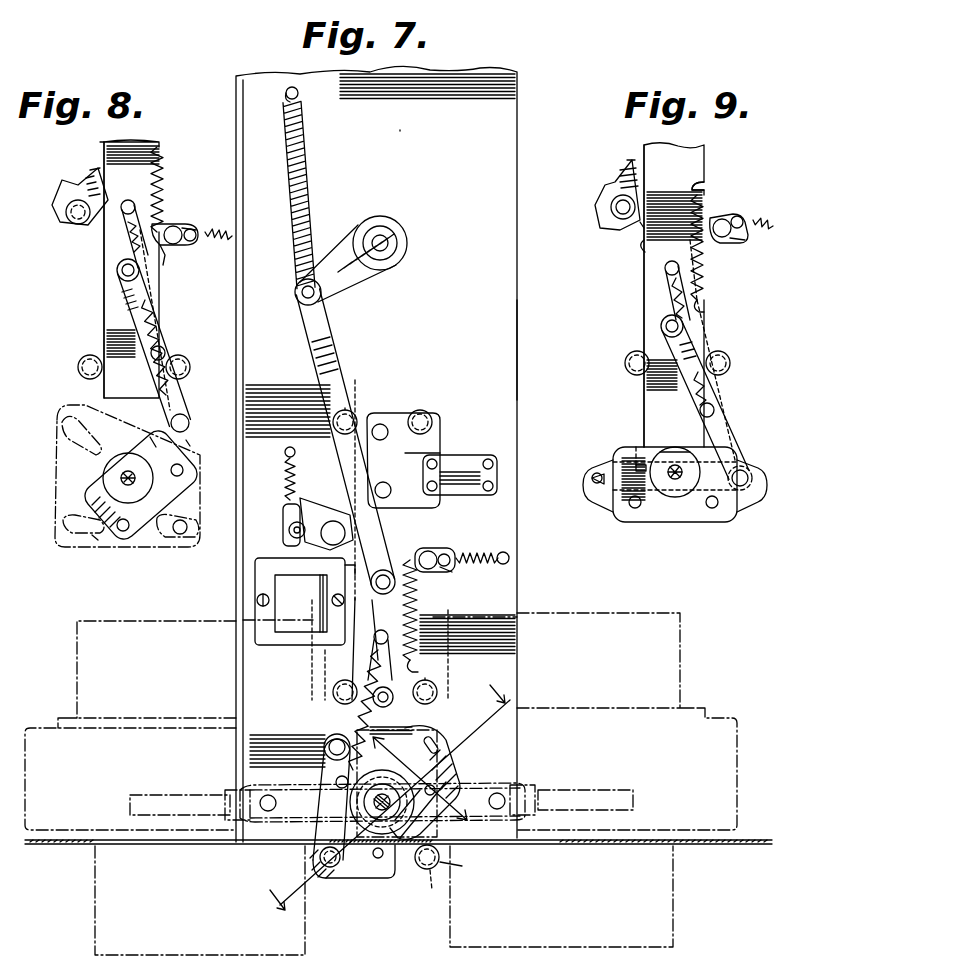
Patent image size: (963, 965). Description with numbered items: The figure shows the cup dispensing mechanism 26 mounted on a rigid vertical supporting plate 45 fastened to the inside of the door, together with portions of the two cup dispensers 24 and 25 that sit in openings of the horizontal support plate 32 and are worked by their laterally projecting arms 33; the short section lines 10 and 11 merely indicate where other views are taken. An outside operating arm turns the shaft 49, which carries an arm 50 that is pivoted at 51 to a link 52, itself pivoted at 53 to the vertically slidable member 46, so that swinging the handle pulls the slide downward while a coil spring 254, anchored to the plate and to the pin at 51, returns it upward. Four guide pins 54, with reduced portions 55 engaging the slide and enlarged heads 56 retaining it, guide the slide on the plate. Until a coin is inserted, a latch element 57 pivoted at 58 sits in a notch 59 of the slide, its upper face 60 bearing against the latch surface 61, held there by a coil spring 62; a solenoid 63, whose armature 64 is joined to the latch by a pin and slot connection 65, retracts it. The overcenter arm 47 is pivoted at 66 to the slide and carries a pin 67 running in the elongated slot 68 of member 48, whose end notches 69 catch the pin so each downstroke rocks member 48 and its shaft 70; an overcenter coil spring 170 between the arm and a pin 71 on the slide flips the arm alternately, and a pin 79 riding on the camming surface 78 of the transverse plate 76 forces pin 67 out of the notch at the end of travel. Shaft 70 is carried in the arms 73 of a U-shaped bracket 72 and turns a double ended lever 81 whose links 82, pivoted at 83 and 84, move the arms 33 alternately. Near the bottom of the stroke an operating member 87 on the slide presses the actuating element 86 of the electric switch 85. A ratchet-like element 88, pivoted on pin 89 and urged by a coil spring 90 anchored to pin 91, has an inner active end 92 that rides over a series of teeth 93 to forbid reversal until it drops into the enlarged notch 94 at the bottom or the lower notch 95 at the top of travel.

In FIG. 7, the section line 10- 10 is at (500, 691).
In FIG. 7, the section line 11- 11 is at (380, 740).
In FIG. 7, the cup dispenser 24 is at (77, 662).
In FIG. 7, the cup dispenser 25 is at (680, 655).
In FIG. 7, the mechanism 26 is at (436, 290).
In FIG. 7, the horizontal support element or plate 32 is at (460, 855).
In FIG. 7, the laterally projecting arm 33 is at (545, 790).
In FIG. 7, the supporting plate 45 is at (500, 358).
In FIG. 7, the vertically slidable member 46 is at (358, 660).
In FIG. 8, the vertically slidable member 46 is at (108, 256).
In FIG. 9, the vertically slidable member 46 is at (655, 290).
In FIG. 7, the overcenter arm 47 is at (330, 790).
In FIG. 8, the overcenter arm 47 is at (197, 495).
In FIG. 9, the overcenter arm 47 is at (725, 420).
In FIG. 7, the slotted member 48 is at (455, 760).
In FIG. 8, the slotted member 48 is at (60, 540).
In FIG. 9, the slotted member 48 is at (596, 494).
In FIG. 7, the shaft 49 is at (388, 243).
In FIG. 7, the arm 50 is at (340, 293).
In FIG. 7, the pivotal connection 51 is at (298, 305).
In FIG. 7, the link 52 is at (350, 365).
In FIG. 7, the pivotal connection 53 is at (396, 586).
In FIG. 7, the guide elements or pins 54 is at (444, 680).
In FIG. 7, the reduced diameter portions 55 is at (333, 692).
In FIG. 7, the enlarged diameter heads 56 is at (437, 692).
In FIG. 7, the latch element 57 is at (340, 512).
In FIG. 8, the latch element 57 is at (80, 182).
In FIG. 9, the latch element 57 is at (625, 176).
In FIG. 7, the pivotal mounting 58 is at (328, 524).
In FIG. 8, the pivotal mounting 58 is at (78, 224).
In FIG. 9, the pivotal mounting 58 is at (610, 210).
In FIG. 8, the notch 59 is at (93, 170).
In FIG. 9, the notch 59 is at (652, 250).
In FIG. 8, the upper face 60 is at (106, 152).
In FIG. 9, the upper face 60 is at (624, 160).
In FIG. 7, the latch surface 61 is at (332, 600).
In FIG. 9, the latch surface 61 is at (642, 230).
In FIG. 7, the coil spring 62 is at (284, 470).
In FIG. 7, the solenoid 63 is at (256, 592).
In FIG. 7, the armature 64 is at (289, 535).
In FIG. 7, the pin and slot connection 65 is at (284, 512).
In FIG. 7, the pivotal attachment 66 is at (388, 690).
In FIG. 8, the pivotal attachment 66 is at (117, 272).
In FIG. 9, the pivotal attachment 66 is at (661, 326).
In FIG. 7, the pin 67 is at (318, 858).
In FIG. 8, the pin 67 is at (190, 425).
In FIG. 9, the pin 67 is at (746, 490).
In FIG. 8, the slot 68 is at (150, 437).
In FIG. 9, the slot 68 is at (636, 462).
In FIG. 7, the notches 69 is at (340, 868).
In FIG. 8, the notches 69 is at (92, 540).
In FIG. 9, the notches 69 is at (592, 478).
In FIG. 7, the shaft 70 is at (388, 822).
In FIG. 8, the shaft 70 is at (121, 480).
In FIG. 9, the shaft 70 is at (675, 480).
In FIG. 7, the pin 71 is at (386, 628).
In FIG. 8, the pin 71 is at (128, 200).
In FIG. 9, the pin 71 is at (665, 268).
In FIG. 7, the U-shaped bracket 72 is at (378, 870).
In FIG. 7, the arms 73 is at (357, 806).
In FIG. 7, the transverse plate 76 is at (455, 773).
In FIG. 7, the camming surface 78 is at (364, 802).
In FIG. 8, the camming surface 78 is at (106, 470).
In FIG. 9, the camming surface 78 is at (692, 452).
In FIG. 7, the pin 79 is at (336, 780).
In FIG. 8, the pin 79 is at (165, 350).
In FIG. 9, the pin 79 is at (700, 410).
In FIG. 7, the double ended lever 81 is at (434, 872).
In FIG. 7, the links 82 is at (268, 812).
In FIG. 7, the pivotal connection 83 is at (258, 792).
In FIG. 7, the pivotal connection 84 is at (462, 869).
In FIG. 7, the electric switch 85 is at (472, 458).
In FIG. 7, the actuating element 86 is at (441, 455).
In FIG. 7, the operating member 87 is at (442, 422).
In FIG. 7, the ratchet-like element 88 is at (447, 554).
In FIG. 8, the ratchet-like element 88 is at (187, 242).
In FIG. 9, the ratchet-like element 88 is at (730, 214).
In FIG. 7, the pin 89 is at (446, 570).
In FIG. 8, the pin 89 is at (198, 232).
In FIG. 9, the pin 89 is at (740, 240).
In FIG. 7, the coil spring 90 is at (487, 553).
In FIG. 8, the coil spring 90 is at (224, 242).
In FIG. 9, the coil spring 90 is at (766, 220).
In FIG. 7, the pin 91 is at (504, 565).
In FIG. 7, the inner active end 92 is at (424, 552).
In FIG. 8, the inner active end 92 is at (175, 224).
In FIG. 9, the inner active end 92 is at (720, 245).
In FIG. 7, the teeth 93 is at (419, 617).
In FIG. 8, the teeth 93 is at (166, 182).
In FIG. 9, the teeth 93 is at (709, 282).
In FIG. 7, the enlarged notch 94 is at (346, 567).
In FIG. 9, the enlarged notch 94 is at (707, 186).
In FIG. 7, the lower enlarged notch 95 is at (414, 660).
In FIG. 8, the lower enlarged notch 95 is at (165, 260).
In FIG. 9, the lower enlarged notch 95 is at (709, 306).
In FIG. 7, the overcenter coil spring 170 is at (327, 742).
In FIG. 8, the overcenter coil spring 170 is at (165, 310).
In FIG. 9, the overcenter coil spring 170 is at (712, 360).
In FIG. 7, the coil spring 254 is at (316, 192).